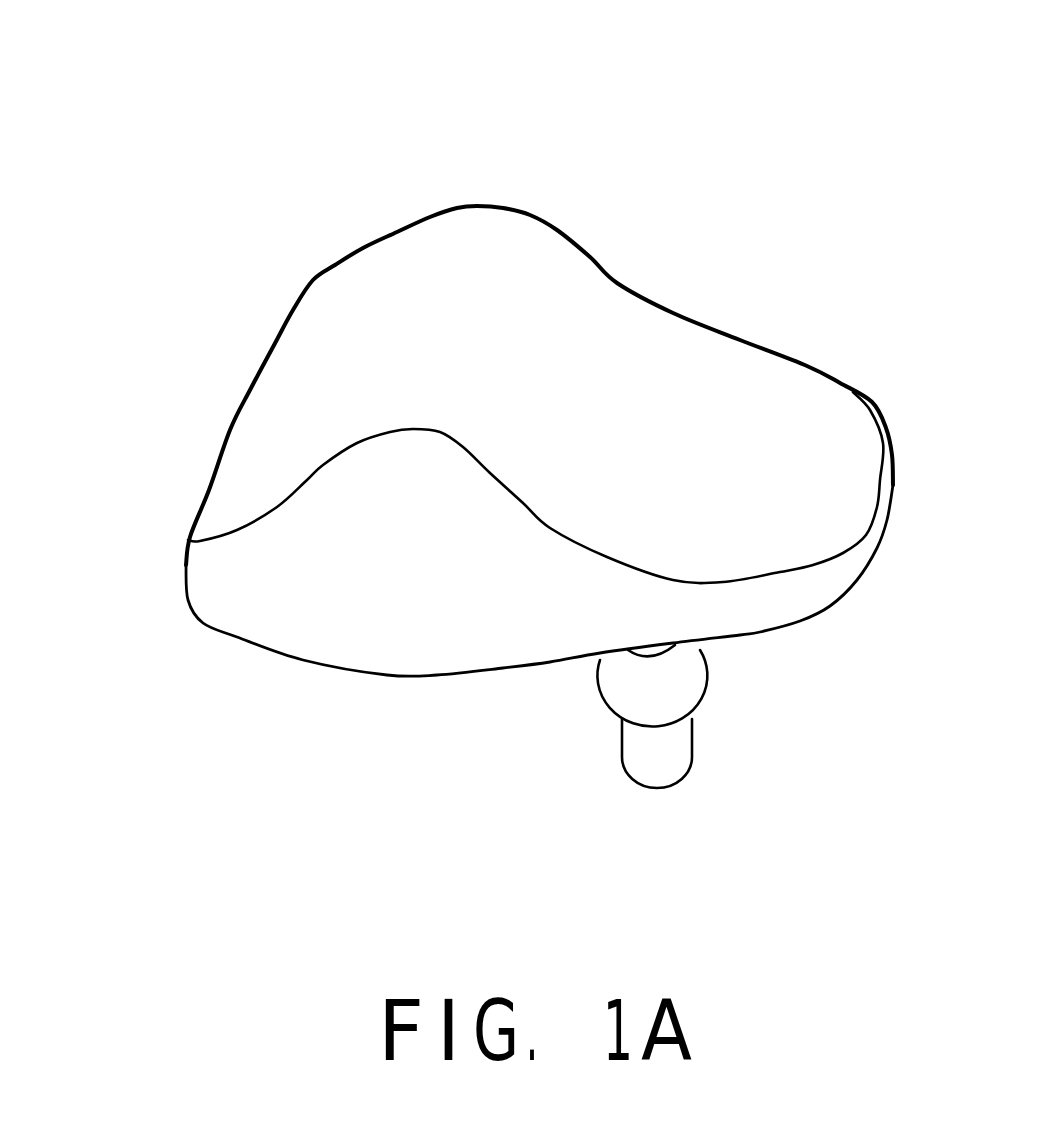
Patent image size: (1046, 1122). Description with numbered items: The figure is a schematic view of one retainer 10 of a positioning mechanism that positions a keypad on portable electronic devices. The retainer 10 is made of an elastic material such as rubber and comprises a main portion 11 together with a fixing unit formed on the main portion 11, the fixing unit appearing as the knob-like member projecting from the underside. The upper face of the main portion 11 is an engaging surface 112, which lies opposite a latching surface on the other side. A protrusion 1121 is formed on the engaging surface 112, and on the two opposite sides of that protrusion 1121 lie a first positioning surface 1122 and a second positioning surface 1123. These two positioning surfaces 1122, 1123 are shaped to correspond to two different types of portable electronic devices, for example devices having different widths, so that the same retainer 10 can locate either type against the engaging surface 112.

The retainer 10 is at (757, 282).
The main portion 11 is at (387, 573).
The engaging surface 112 is at (667, 92).
The protrusion 1121 is at (468, 296).
The first positioning surface 1122 is at (362, 295).
The second positioning surface 1123 is at (600, 328).